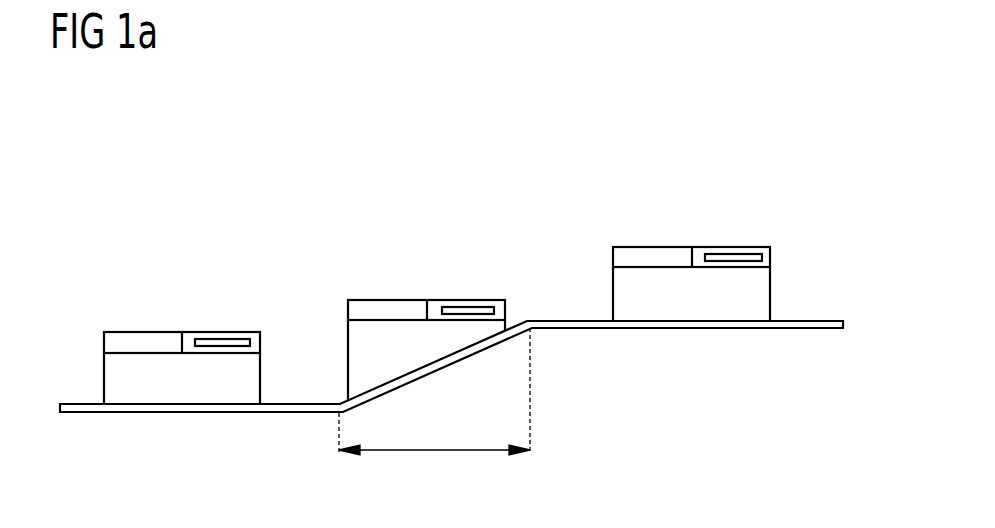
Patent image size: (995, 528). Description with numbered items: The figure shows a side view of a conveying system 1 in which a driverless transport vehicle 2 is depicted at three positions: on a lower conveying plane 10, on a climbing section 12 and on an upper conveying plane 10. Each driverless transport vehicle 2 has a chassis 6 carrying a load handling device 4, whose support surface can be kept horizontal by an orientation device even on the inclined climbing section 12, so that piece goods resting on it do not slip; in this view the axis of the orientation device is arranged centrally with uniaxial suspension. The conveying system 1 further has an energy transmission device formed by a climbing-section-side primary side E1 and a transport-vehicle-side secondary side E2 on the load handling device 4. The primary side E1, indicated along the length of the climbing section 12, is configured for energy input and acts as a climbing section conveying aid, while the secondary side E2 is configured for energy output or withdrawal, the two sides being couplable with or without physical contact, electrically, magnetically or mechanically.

The conveying system 1 is at (136, 151).
The conveying plane 10 is at (338, 203).
The climbing section 12 is at (528, 179).
The driverless transport vehicle 2 is at (410, 277).
The load handling device 4 is at (100, 333).
The chassis 6 is at (104, 381).
The secondary side E2 is at (478, 269).
The primary side E1 is at (434, 448).